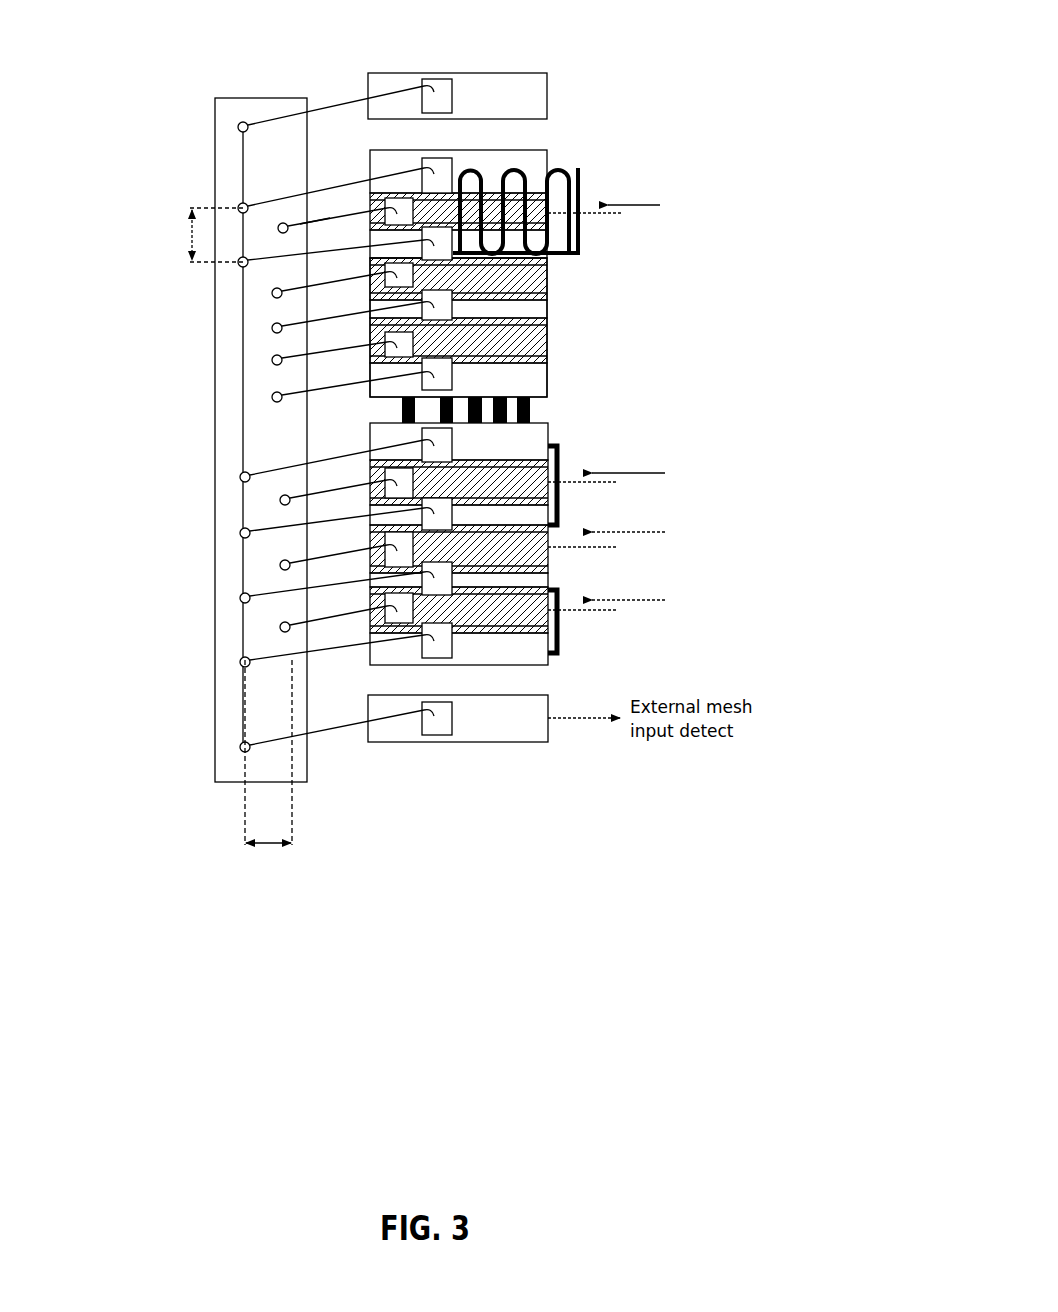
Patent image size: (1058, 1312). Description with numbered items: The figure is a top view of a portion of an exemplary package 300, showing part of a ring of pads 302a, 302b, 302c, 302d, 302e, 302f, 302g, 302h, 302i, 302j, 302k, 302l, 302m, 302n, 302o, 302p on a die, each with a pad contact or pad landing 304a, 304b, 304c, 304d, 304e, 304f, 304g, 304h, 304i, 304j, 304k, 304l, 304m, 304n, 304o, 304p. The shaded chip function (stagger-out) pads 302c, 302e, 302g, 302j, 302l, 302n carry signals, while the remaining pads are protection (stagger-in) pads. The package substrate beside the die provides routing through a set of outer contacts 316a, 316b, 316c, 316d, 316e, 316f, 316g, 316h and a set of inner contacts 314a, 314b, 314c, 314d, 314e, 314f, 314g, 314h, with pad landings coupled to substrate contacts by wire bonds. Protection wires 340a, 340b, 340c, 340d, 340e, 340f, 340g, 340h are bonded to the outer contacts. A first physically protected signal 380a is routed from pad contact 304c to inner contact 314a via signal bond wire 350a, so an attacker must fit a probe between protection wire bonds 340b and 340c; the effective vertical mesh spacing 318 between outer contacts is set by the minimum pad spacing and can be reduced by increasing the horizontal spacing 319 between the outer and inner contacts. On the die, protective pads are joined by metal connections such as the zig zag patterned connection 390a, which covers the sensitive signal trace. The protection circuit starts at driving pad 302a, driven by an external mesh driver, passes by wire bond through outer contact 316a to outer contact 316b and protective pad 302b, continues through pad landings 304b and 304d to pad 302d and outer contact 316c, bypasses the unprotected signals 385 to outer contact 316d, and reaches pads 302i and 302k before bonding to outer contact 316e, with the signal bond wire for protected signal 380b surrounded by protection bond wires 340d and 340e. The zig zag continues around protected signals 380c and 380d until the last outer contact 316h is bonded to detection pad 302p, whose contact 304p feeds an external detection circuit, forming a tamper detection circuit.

The package 300 is at (765, 21).
The driving pad 302a is at (540, 77).
The protective pad 302b is at (540, 155).
The signal pad 302c is at (580, 200).
The protection pad 302d is at (580, 247).
The chip function pad 302e is at (550, 270).
The protection pad 302f is at (550, 305).
The chip function pad 302g is at (550, 338).
The protection pad 302h is at (550, 378).
The protection pad 302i is at (550, 427).
The chip function pad 302j is at (550, 462).
The protection pad 302k is at (550, 503).
The chip function pad 302l is at (550, 550).
The protection pad 302m is at (550, 585).
The chip function pad 302n is at (550, 625).
The protection pad 302o is at (550, 666).
The detection pad 302p is at (550, 744).
The pad landing 304a is at (438, 80).
The pad landing 304b is at (440, 160).
The pad contact 304c is at (385, 207).
The pad landing 304d is at (437, 243).
The pad contact 304e is at (385, 274).
The pad contact 304f is at (437, 305).
The pad contact 304g is at (385, 342).
The pad contact 304h is at (456, 382).
The pad contact 304i is at (456, 442).
The pad contact 304j is at (385, 481).
The pad contact 304k is at (453, 507).
The pad contact 304l is at (385, 547).
The pad contact 304m is at (453, 570).
The pad contact 304n is at (385, 607).
The pad contact 304o is at (456, 648).
The detection pad contact 304p is at (456, 715).
The inner contact 314a is at (327, 218).
The inner contact 314b is at (326, 283).
The inner contact 314c is at (344, 317).
The inner contact 314d is at (323, 350).
The inner contact 314e is at (341, 387).
The inner contact 314f is at (328, 490).
The inner contact 314g is at (326, 555).
The inner contact 314h is at (326, 617).
The outer contact 316a is at (239, 115).
The outer contact 316b is at (238, 205).
The outer contact 316c is at (238, 266).
The outer contact 316d is at (240, 476).
The outer contact 316e is at (240, 532).
The outer contact 316f is at (240, 597).
The outer contact 316g is at (240, 661).
The outer contact 316h is at (240, 746).
The vertical mesh spacing 318 is at (191, 235).
The horizontal spacing 319 is at (268, 768).
The protection wire 340a is at (345, 103).
The protection wire bond 340b is at (292, 197).
The protection wire bond 340c is at (336, 252).
The protection bond wire 340d is at (332, 458).
The protection bond wire 340e is at (340, 519).
The protection wire 340f is at (340, 584).
The protection wire 340g is at (340, 648).
The protection wire 340h is at (340, 727).
The signal bond wire 350a is at (322, 205).
The physically protected signal 380a is at (629, 206).
The physically protected signal 380b is at (631, 485).
The physically protected signal 380c is at (631, 534).
The physically protected signal 380d is at (631, 621).
The unprotected signals 385 is at (688, 258).
The connection 390a is at (580, 170).